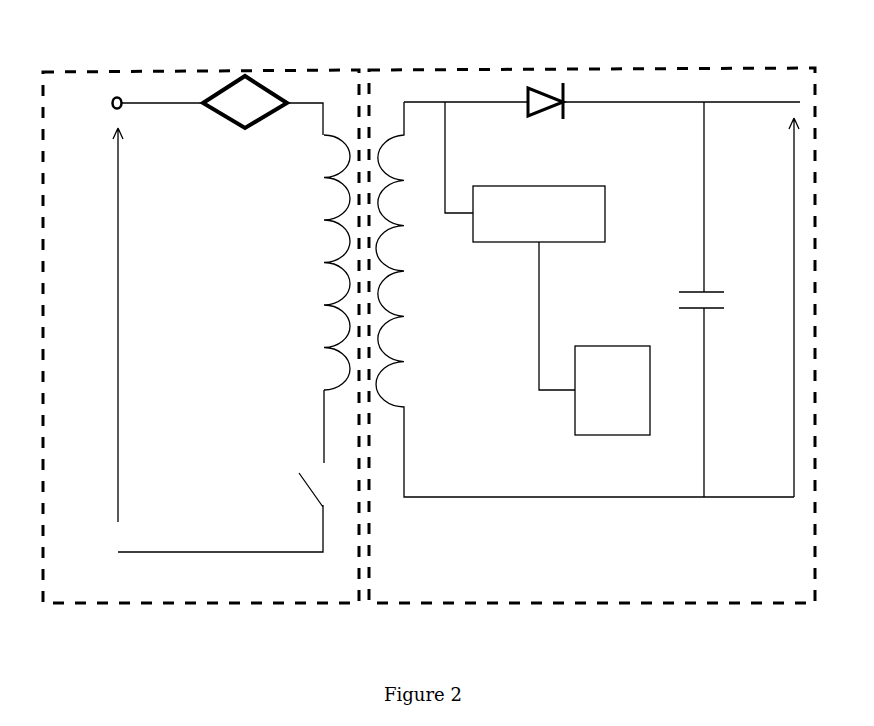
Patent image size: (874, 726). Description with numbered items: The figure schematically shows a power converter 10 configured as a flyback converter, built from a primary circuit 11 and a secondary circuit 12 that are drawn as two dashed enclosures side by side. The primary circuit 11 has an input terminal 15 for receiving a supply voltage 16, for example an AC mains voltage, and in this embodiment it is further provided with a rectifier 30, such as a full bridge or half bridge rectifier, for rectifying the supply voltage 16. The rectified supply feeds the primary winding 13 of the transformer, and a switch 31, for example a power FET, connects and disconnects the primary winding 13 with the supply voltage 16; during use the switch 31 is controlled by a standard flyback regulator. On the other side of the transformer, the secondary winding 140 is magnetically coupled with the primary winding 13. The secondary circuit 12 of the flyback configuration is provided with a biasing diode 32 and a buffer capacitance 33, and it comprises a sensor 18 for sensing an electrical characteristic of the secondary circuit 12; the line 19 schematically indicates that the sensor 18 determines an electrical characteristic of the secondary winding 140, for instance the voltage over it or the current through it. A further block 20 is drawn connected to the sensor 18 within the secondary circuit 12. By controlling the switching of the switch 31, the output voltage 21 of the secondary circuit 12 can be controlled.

The power converter 10 is at (216, 36).
The primary circuit 11 is at (132, 603).
The secondary circuit 12 is at (597, 603).
The primary winding 13 is at (330, 305).
The secondary winding 140 is at (387, 358).
The input terminal 15 is at (120, 108).
The supply voltage 16 is at (118, 363).
The sensor 18 is at (605, 208).
The line 19 is at (445, 143).
The load 20 is at (613, 346).
The output voltage 21 is at (794, 275).
The rectifier 30 is at (236, 94).
The switch 31 is at (312, 490).
The biasing diode 32 is at (533, 105).
The buffer capacitance 33 is at (685, 300).